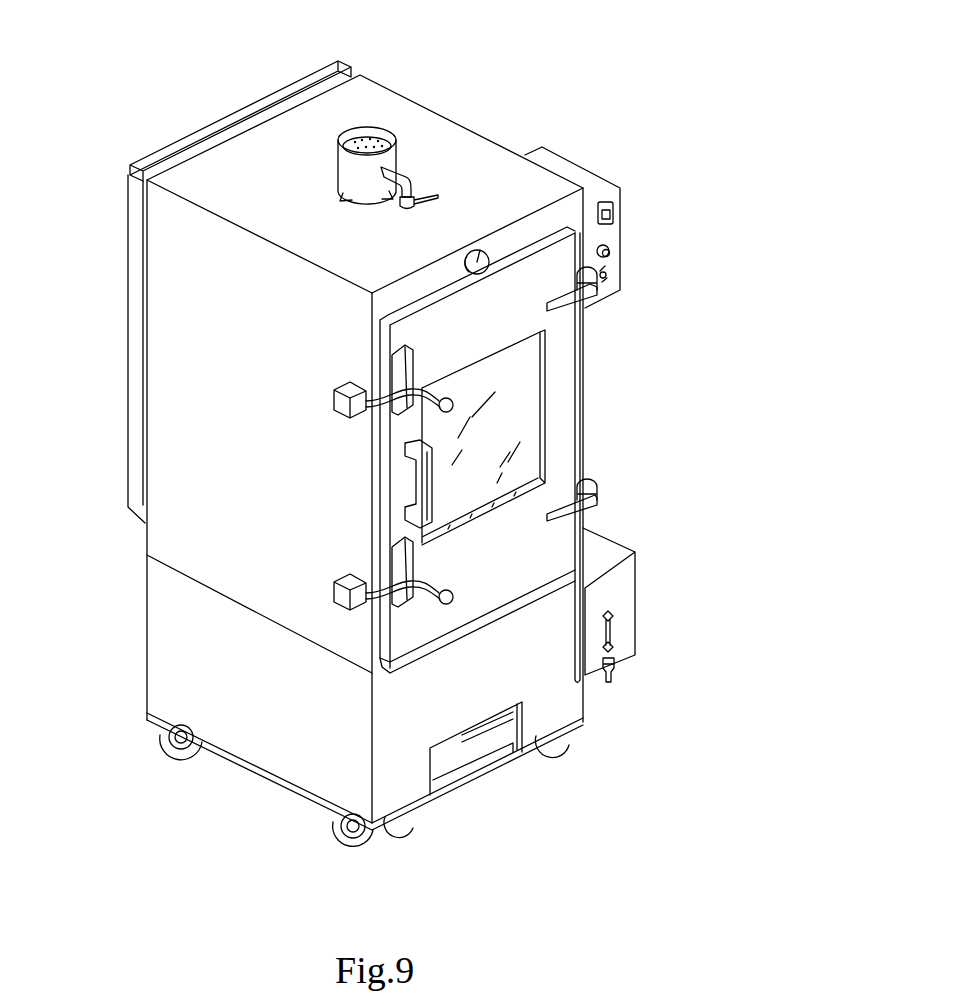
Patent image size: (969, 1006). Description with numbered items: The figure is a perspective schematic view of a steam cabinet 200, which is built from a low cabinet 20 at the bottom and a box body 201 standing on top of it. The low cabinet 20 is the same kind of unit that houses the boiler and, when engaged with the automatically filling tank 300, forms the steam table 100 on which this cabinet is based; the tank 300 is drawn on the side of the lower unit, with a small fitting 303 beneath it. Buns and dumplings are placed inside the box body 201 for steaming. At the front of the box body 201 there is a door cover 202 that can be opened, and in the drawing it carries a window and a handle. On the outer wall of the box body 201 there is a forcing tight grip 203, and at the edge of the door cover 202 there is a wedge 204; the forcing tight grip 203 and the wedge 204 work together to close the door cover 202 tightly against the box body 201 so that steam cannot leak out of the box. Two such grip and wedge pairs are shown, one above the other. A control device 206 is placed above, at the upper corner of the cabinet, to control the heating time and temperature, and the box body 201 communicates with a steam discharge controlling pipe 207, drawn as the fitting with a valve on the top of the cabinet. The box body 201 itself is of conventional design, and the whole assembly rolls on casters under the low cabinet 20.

The steam cabinet 200 is at (595, 88).
The box body 201 is at (165, 262).
The door cover 202 is at (562, 413).
The forcing tight grip 203 is at (335, 400).
The wedge 204 is at (404, 371).
The control device 206 is at (614, 233).
The steam discharge controlling pipe 207 is at (397, 177).
The steam table 100 is at (633, 515).
The automatically filling tank 300 is at (626, 604).
The drain valve 303 is at (614, 665).
The low cabinet 20 is at (165, 668).